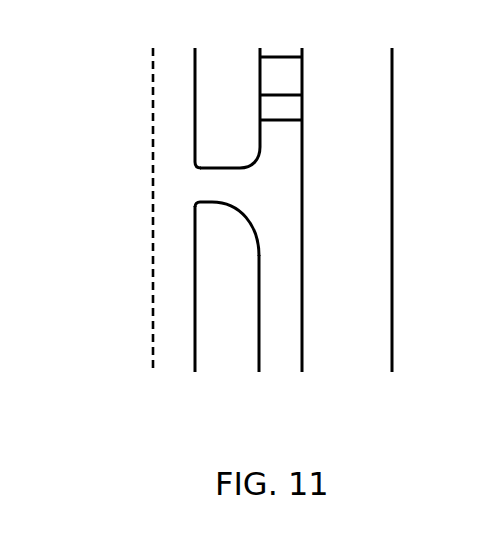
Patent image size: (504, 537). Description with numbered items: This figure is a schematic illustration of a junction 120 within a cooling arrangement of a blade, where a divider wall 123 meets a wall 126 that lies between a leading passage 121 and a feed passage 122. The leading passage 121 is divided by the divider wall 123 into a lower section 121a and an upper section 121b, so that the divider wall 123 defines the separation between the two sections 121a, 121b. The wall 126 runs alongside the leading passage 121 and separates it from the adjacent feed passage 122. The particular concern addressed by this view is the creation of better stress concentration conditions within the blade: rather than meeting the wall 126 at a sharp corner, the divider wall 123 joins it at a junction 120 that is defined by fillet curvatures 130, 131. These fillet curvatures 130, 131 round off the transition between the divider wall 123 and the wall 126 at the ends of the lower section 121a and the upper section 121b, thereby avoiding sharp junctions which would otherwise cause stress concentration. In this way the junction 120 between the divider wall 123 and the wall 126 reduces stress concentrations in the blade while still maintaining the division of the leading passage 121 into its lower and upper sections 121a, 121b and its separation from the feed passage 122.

The junction 120 is at (262, 192).
The leading passage 121 is at (245, 313).
The lower section 121a is at (210, 342).
The upper section 121b is at (205, 136).
The feed passage 122 is at (370, 230).
The divider wall 123 is at (238, 220).
The wall 126 is at (285, 283).
The fillet curvature 130 is at (218, 188).
The fillet curvature 131 is at (253, 156).